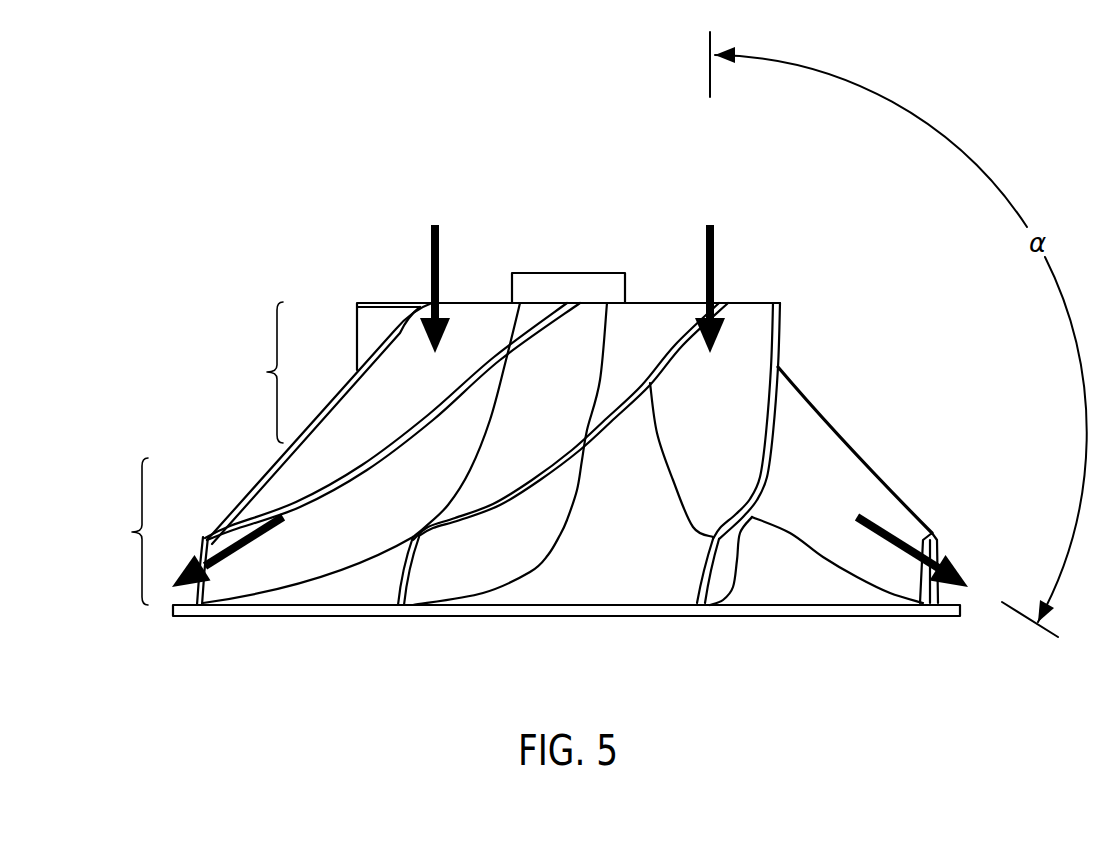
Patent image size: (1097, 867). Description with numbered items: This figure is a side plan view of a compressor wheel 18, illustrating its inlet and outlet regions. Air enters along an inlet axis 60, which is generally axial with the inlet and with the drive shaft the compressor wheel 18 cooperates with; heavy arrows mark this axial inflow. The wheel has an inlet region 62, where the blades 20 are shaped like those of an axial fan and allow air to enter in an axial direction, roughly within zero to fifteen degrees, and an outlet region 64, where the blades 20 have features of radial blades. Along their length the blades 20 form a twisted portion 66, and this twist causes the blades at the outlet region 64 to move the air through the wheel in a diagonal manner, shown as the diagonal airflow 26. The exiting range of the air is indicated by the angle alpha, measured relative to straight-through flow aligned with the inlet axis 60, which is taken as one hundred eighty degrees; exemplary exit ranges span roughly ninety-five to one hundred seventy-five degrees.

The compressor wheel 18 is at (778, 238).
The blades 20 is at (630, 327).
The diagonal airflow 26 is at (963, 563).
The inlet axis 60 is at (705, 223).
The inlet region 62 is at (267, 372).
The outlet region 64 is at (132, 532).
The twisted portion 66 is at (567, 463).